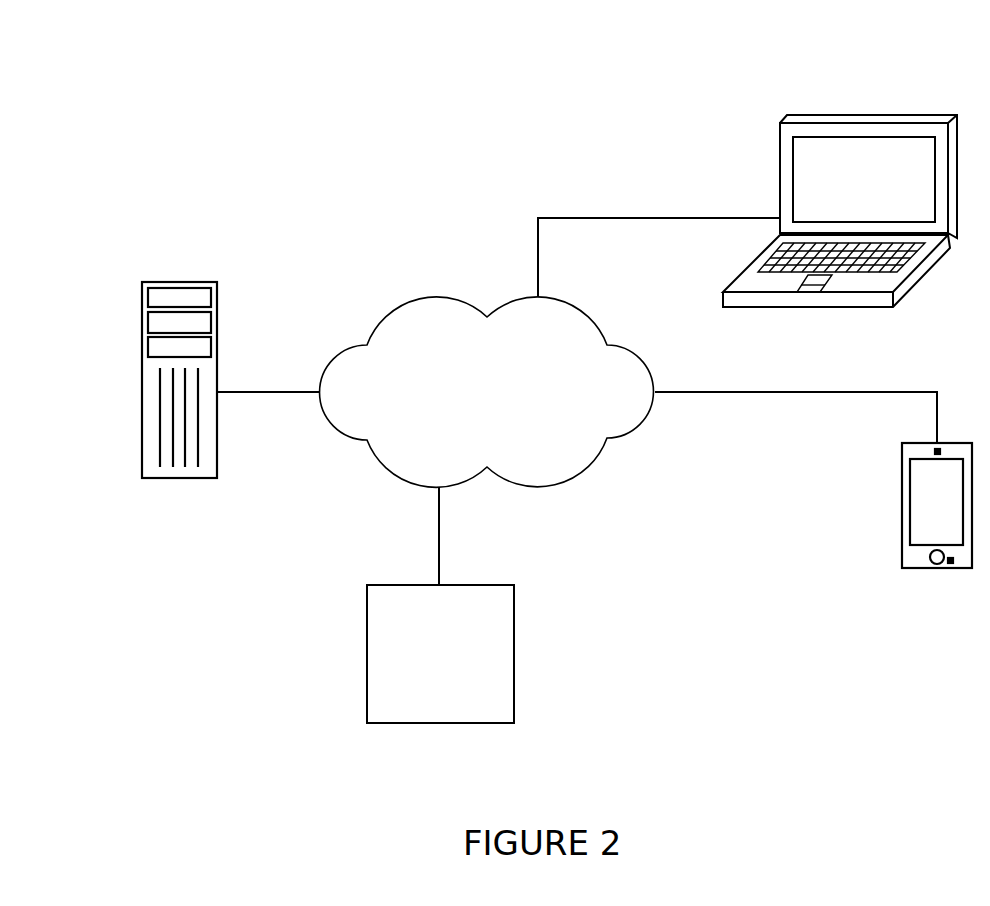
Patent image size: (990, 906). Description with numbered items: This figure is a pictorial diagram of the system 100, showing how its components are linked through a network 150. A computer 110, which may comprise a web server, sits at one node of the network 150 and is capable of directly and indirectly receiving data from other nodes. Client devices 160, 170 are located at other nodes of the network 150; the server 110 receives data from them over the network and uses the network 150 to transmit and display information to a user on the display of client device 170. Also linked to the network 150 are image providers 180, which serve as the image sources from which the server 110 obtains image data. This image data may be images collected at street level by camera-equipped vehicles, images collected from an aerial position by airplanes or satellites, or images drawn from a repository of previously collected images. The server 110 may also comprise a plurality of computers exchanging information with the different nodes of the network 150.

The system 100 is at (357, 88).
The computer 110 is at (142, 295).
The network 150 is at (437, 296).
The client device 160 is at (902, 467).
The client device 170 is at (780, 153).
The image providers 180 is at (392, 583).